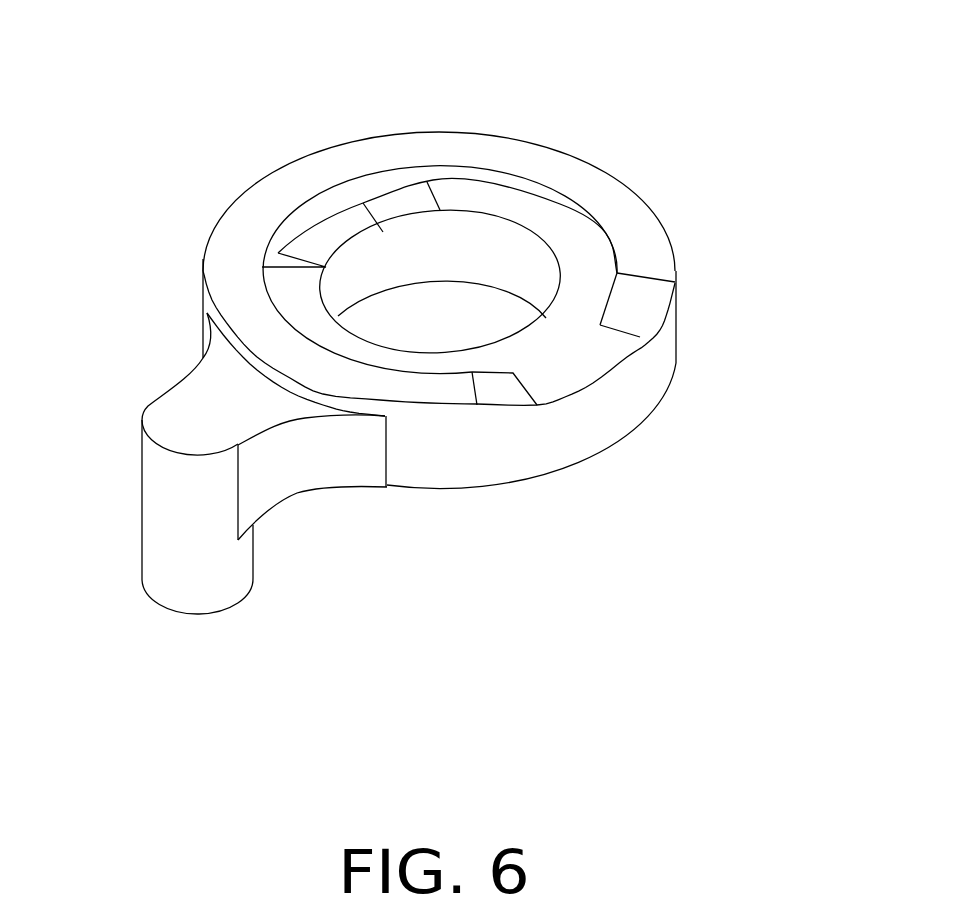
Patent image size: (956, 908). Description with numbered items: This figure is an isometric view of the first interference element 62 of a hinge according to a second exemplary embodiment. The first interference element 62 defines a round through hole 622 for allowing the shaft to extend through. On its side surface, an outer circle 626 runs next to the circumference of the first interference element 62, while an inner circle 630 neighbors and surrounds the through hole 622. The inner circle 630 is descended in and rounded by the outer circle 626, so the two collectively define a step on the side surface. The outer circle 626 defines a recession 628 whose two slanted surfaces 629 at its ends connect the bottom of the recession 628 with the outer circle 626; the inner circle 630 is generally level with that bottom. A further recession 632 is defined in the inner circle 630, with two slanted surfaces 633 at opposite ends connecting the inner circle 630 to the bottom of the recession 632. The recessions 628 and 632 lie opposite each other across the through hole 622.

The first interference element 62 is at (668, 170).
The through hole 622 is at (500, 255).
The outer circle 626 is at (243, 220).
The recession 628 is at (580, 353).
The slanted surfaces 629 is at (637, 307).
The inner circle 630 is at (570, 283).
The recession 632 is at (330, 237).
The slanted surfaces 633 is at (410, 203).